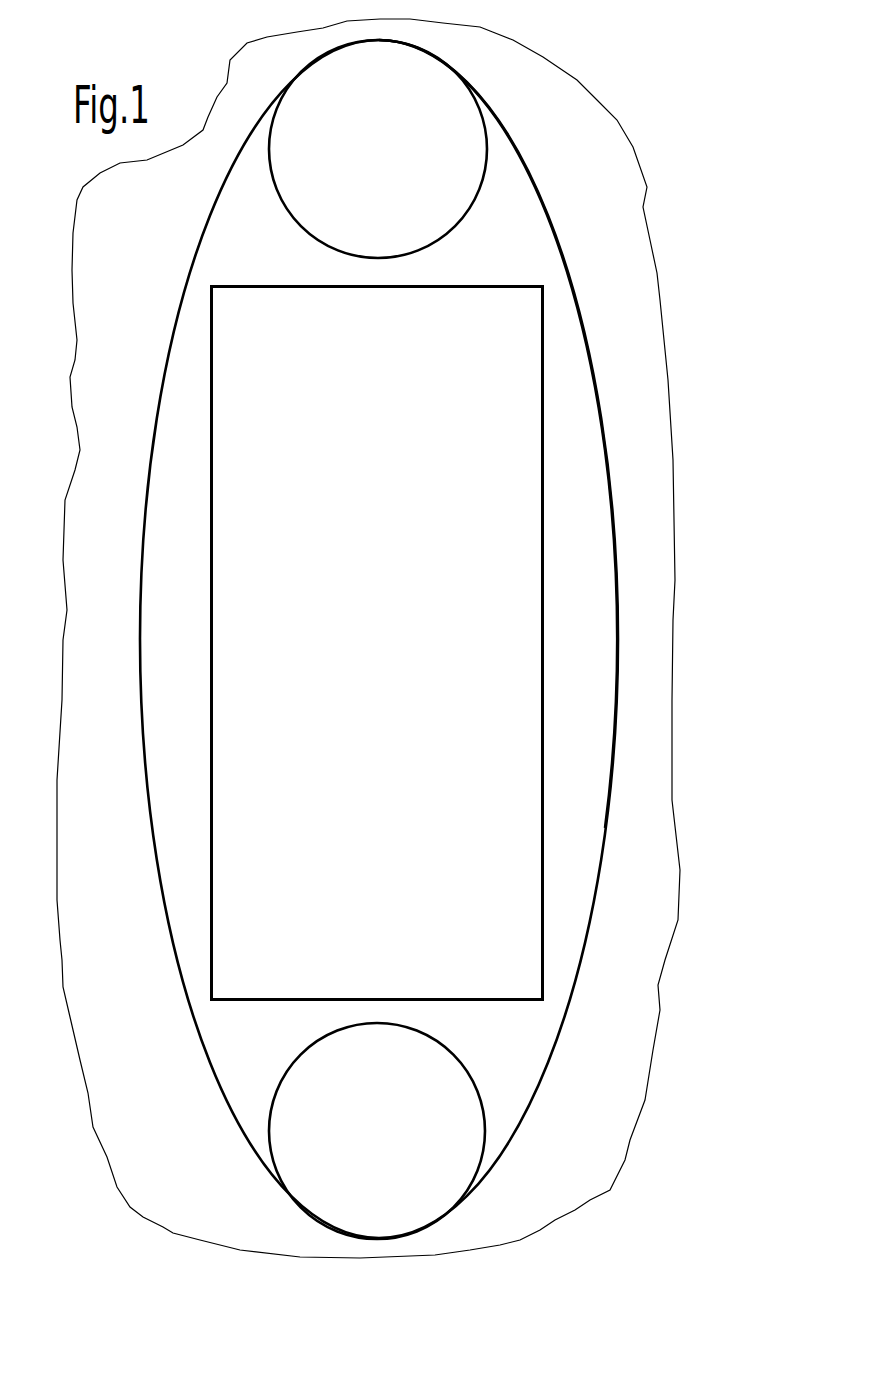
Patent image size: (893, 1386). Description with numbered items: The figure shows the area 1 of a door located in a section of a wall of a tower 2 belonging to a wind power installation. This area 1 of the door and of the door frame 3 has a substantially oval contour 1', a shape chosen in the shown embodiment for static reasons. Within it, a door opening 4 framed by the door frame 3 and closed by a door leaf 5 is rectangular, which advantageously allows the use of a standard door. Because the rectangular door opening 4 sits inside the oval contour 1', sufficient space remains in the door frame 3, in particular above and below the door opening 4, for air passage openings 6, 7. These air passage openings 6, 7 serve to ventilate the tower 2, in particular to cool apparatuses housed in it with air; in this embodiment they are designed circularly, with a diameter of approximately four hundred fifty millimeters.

The area 1 is at (456, 639).
The oval contour 1' is at (567, 245).
The tower 2 is at (602, 182).
The door frame 3 is at (562, 448).
The door opening 4 is at (542, 550).
The door leaf 5 is at (472, 662).
The air passage opening 6 is at (455, 1108).
The air passage opening 7 is at (457, 135).